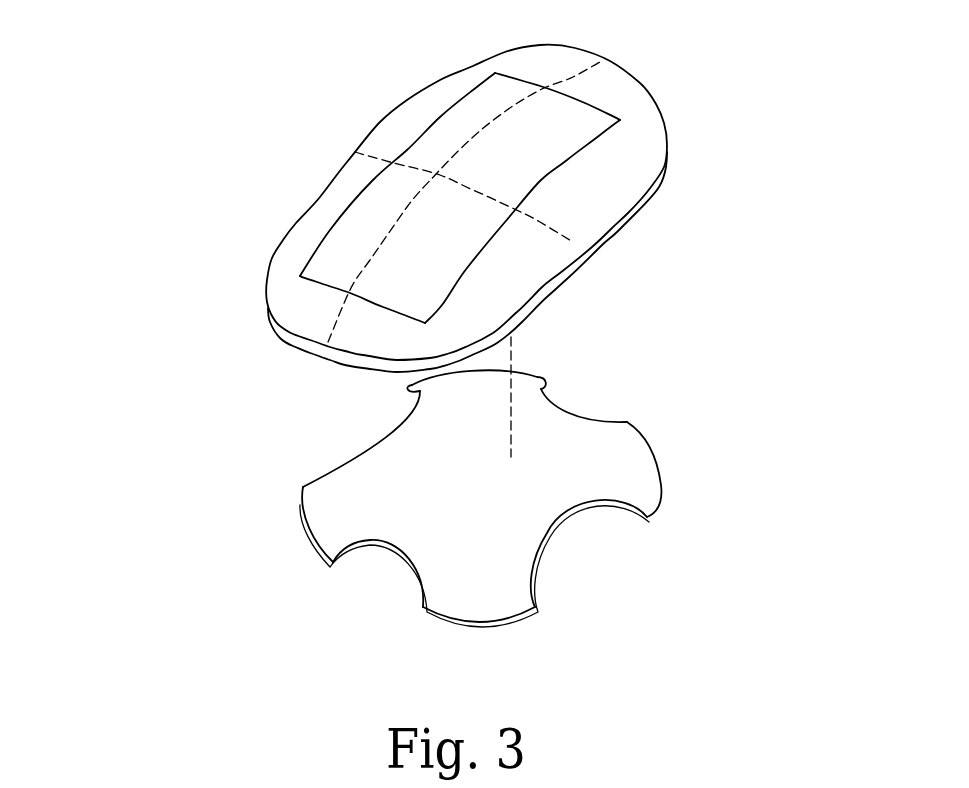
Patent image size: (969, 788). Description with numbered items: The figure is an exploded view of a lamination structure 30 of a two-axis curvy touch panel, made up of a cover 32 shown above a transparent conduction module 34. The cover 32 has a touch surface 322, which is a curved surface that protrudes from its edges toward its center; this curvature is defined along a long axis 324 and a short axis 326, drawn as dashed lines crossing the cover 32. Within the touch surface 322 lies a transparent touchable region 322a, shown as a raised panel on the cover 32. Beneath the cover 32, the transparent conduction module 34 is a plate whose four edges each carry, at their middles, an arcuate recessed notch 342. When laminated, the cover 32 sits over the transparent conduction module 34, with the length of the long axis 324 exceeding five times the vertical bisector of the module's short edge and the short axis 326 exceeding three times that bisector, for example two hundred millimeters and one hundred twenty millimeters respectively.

The lamination structure 30 is at (185, 323).
The cover 32 is at (291, 228).
The touch surface 322 is at (570, 158).
The transparent touchable region 322a is at (568, 102).
The long axis 324 is at (484, 181).
The short axis 326 is at (434, 182).
The transparent conduction module 34 is at (627, 463).
The arcuate recessed notch 342 is at (585, 415).